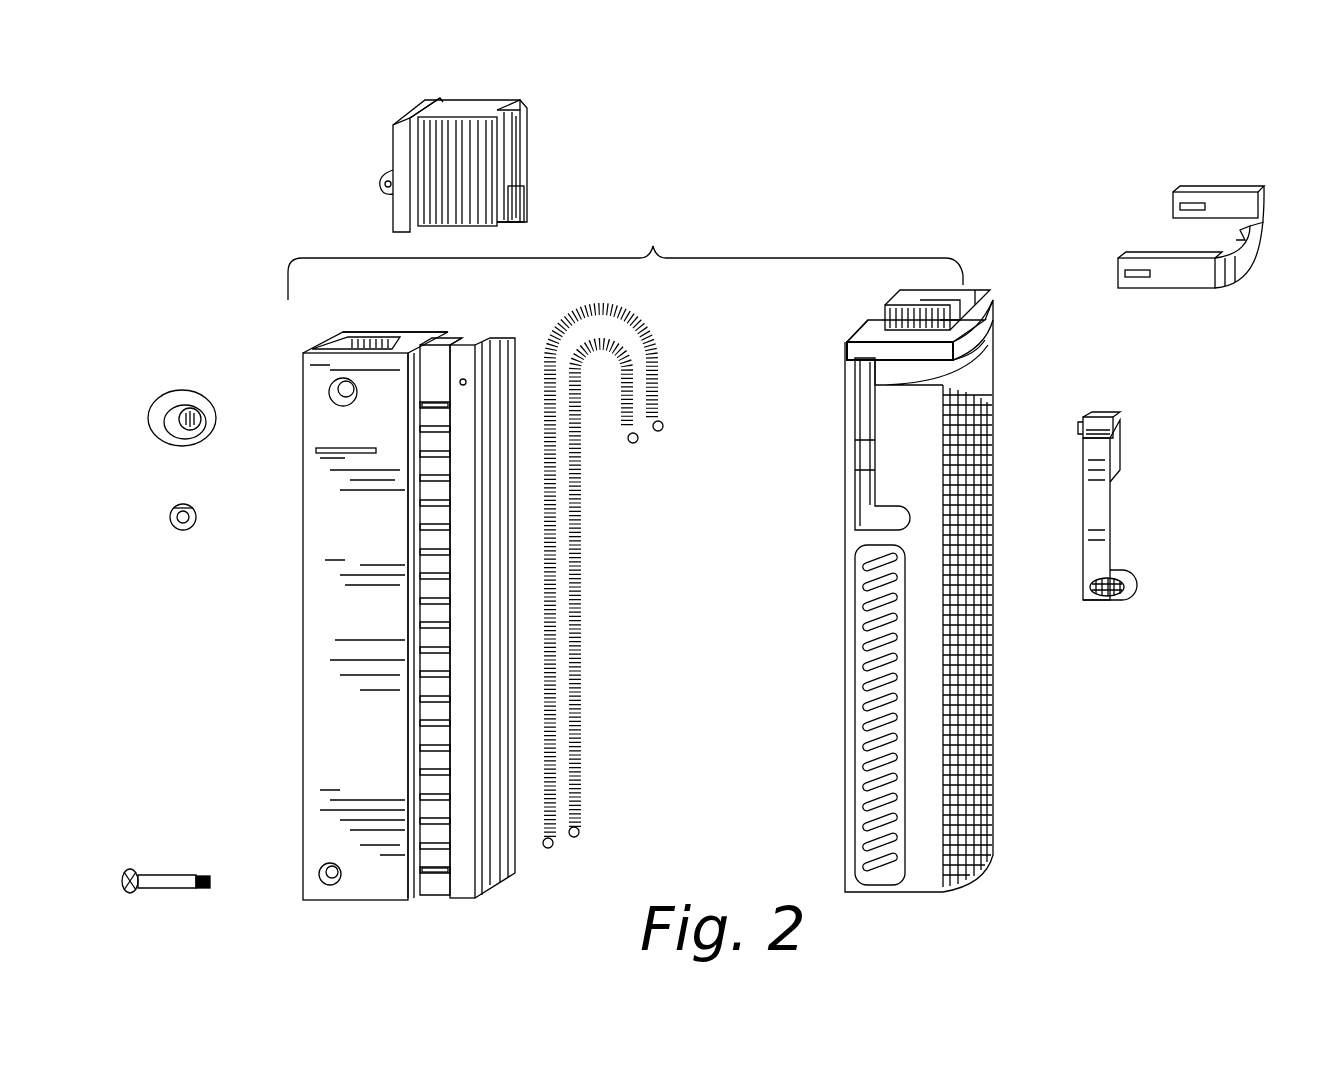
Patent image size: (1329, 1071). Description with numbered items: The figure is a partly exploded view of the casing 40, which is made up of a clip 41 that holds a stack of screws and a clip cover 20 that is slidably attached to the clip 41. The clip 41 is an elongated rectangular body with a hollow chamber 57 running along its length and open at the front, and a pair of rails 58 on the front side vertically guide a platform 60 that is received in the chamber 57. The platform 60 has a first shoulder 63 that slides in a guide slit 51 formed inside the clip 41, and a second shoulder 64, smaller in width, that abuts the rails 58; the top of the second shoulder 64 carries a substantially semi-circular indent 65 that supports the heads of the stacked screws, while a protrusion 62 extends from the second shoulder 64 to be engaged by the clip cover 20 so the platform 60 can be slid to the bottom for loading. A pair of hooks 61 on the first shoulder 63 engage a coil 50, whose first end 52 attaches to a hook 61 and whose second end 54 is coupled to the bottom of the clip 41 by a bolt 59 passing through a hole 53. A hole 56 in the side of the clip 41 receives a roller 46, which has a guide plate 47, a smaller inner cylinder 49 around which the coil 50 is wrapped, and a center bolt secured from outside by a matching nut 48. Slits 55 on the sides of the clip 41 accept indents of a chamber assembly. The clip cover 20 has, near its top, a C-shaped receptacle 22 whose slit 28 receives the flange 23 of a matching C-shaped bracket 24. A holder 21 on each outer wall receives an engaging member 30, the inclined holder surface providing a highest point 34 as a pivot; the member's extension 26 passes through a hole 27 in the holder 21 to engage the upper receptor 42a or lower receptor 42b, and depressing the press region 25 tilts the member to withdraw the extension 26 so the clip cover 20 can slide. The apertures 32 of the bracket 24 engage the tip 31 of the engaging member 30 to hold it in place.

The clip cover 20 is at (1003, 720).
The holder 21 is at (870, 490).
The C-shaped receptacle 22 is at (988, 375).
The flange 23 is at (1264, 235).
The C-shaped bracket 24 is at (1095, 198).
The press region 25 is at (1125, 602).
The extension 26 is at (1114, 425).
The hole 27 is at (855, 352).
The slit 28 is at (985, 342).
The engaging member 30 is at (1128, 508).
The tip 31 is at (1080, 440).
The apertures 32 is at (1120, 273).
The highest point 34 is at (862, 428).
The casing 40 is at (625, 256).
The clip 41 is at (318, 690).
The upper receptor 42a is at (426, 406).
The lower receptor 42b is at (438, 871).
The roller 46 is at (162, 386).
The guide plate 47 is at (207, 395).
The matching nut 48 is at (170, 520).
The inner cylinder 49 is at (150, 422).
The coil 50 is at (580, 585).
The guide slit 51 is at (430, 345).
The first end 52 is at (664, 427).
The hole 53 is at (320, 882).
The second end 54 is at (578, 837).
The slits 55 is at (348, 455).
The hole 56 is at (329, 392).
The hollow chamber 57 is at (364, 337).
The rails 58 is at (510, 340).
The bolt 59 is at (172, 874).
The platform 60 is at (492, 96).
The hooks 61 is at (385, 190).
The protrusion 62 is at (520, 210).
The first shoulder 63 is at (418, 112).
The second shoulder 64 is at (518, 156).
The indent 65 is at (518, 122).